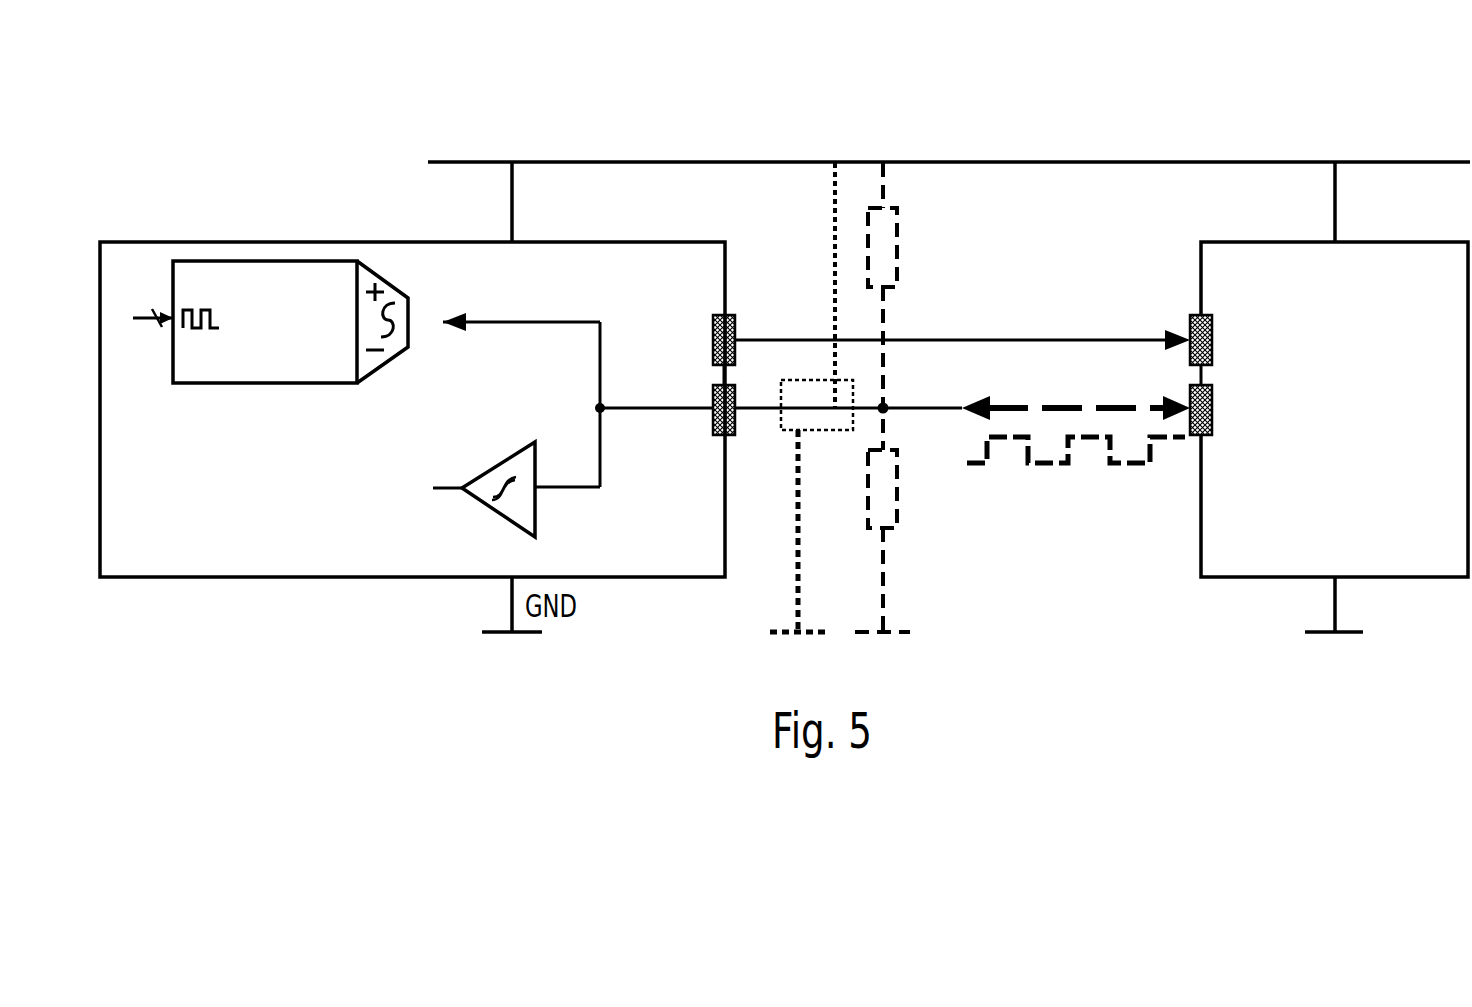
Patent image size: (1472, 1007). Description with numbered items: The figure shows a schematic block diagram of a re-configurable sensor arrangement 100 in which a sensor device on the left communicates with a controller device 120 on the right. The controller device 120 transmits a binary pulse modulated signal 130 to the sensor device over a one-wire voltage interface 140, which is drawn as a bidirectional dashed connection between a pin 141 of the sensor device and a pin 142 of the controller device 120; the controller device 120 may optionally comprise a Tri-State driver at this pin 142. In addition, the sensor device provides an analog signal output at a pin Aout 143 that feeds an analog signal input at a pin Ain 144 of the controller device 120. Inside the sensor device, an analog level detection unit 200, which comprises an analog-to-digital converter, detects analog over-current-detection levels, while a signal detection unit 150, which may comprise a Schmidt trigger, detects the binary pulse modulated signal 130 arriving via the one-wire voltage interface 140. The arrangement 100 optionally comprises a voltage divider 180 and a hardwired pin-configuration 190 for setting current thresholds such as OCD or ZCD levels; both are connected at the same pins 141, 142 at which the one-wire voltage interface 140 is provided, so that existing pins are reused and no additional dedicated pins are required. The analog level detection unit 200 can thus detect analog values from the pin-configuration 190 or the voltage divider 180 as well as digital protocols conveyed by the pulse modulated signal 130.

The sensor arrangement 100 is at (167, 121).
The controller device 120 is at (1435, 580).
The pulse modulated signal 130 is at (1045, 468).
The one-wire voltage interface 140 is at (1075, 405).
The pin 141 is at (720, 437).
The pin 142 is at (1205, 437).
The pin Aout 143 is at (724, 313).
The pin Ain 144 is at (1190, 316).
The signal detection unit 150 is at (472, 463).
The voltage divider 180 is at (918, 246).
The hardwired pin-configuration 190 is at (816, 450).
The analog level detection unit 200 is at (267, 388).